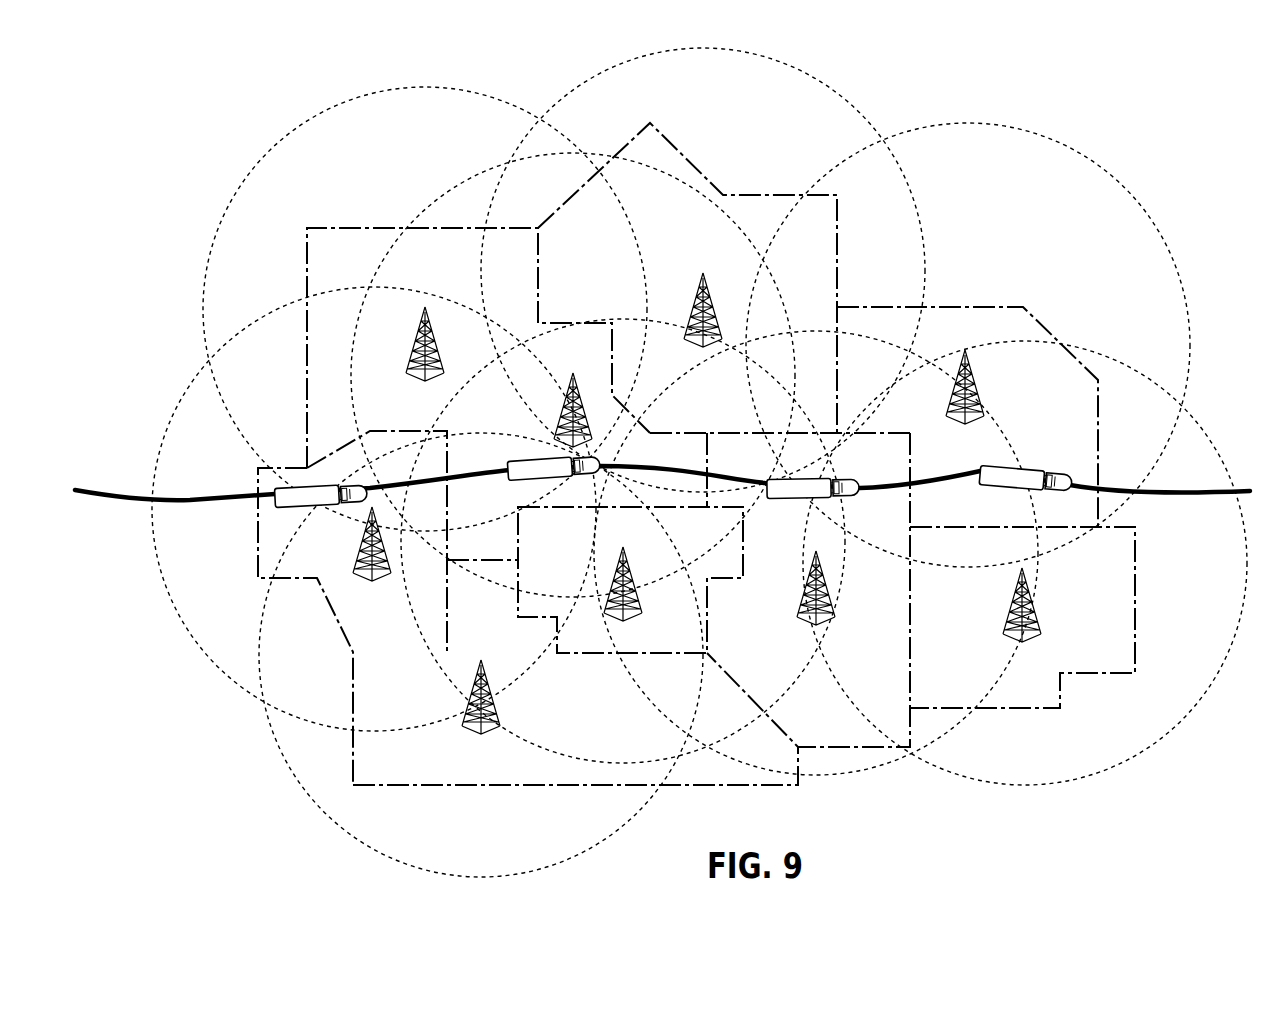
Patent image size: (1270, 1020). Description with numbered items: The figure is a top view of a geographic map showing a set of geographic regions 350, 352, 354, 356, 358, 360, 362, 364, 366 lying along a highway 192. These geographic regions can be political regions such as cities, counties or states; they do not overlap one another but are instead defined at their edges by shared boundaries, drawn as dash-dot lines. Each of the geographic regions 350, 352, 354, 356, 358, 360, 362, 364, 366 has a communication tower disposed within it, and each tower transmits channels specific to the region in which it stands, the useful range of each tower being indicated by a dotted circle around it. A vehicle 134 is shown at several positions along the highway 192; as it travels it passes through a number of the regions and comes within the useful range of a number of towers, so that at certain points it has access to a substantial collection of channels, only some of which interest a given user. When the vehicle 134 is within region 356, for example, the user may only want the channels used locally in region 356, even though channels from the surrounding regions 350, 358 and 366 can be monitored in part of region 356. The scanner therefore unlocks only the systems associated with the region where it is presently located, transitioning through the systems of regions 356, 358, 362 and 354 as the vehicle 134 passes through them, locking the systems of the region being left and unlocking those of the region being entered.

The vehicle 134 is at (295, 486).
The highway 192 is at (117, 496).
The geographic region 350 is at (452, 280).
The geographic region 352 is at (712, 248).
The geographic region 354 is at (1042, 389).
The geographic region 356 is at (343, 561).
The geographic region 358 is at (525, 426).
The geographic region 360 is at (582, 549).
The geographic region 362 is at (775, 626).
The geographic region 364 is at (995, 607).
The geographic region 366 is at (595, 719).